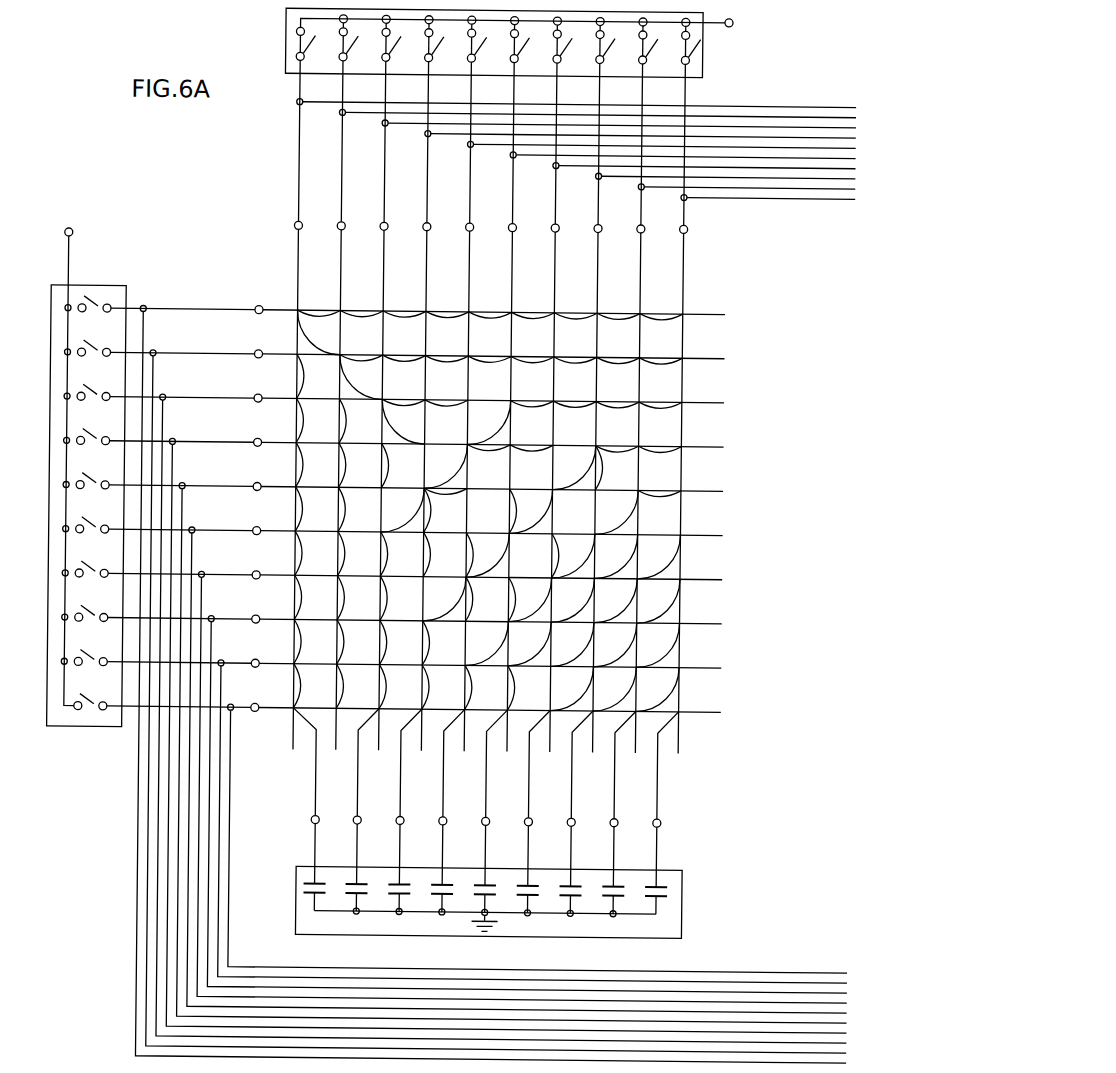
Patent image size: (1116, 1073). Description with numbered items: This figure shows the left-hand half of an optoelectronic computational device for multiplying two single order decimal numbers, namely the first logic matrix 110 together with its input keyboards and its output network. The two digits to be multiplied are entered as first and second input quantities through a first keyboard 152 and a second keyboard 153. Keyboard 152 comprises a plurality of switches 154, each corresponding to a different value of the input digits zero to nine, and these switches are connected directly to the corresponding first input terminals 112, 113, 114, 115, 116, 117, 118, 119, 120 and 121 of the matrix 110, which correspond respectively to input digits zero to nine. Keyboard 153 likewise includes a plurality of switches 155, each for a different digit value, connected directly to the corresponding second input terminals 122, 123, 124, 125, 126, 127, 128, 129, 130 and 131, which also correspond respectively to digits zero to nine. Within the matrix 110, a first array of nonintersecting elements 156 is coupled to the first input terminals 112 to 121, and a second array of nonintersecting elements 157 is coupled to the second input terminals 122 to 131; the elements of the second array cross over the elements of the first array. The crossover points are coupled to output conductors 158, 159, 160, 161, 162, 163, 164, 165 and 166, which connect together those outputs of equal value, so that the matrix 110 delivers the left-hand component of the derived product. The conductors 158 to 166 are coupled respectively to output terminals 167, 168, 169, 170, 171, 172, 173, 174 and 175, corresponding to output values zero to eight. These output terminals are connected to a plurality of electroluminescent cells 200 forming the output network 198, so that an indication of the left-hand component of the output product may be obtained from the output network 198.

The first logic matrix 110 is at (723, 283).
The first input terminal 112 is at (293, 223).
The first input terminal 113 is at (336, 223).
The first input terminal 114 is at (379, 223).
The first input terminal 115 is at (422, 223).
The first input terminal 116 is at (465, 223).
The first input terminal 117 is at (508, 223).
The first input terminal 118 is at (551, 223).
The first input terminal 119 is at (594, 223).
The first input terminal 120 is at (636, 223).
The first input terminal 121 is at (679, 223).
The second input terminal 122 is at (260, 307).
The second input terminal 123 is at (262, 352).
The second input terminal 124 is at (262, 396).
The second input terminal 125 is at (262, 440).
The second input terminal 126 is at (262, 484).
The second input terminal 127 is at (262, 529).
The second input terminal 128 is at (262, 573).
The second input terminal 129 is at (262, 617).
The second input terminal 130 is at (262, 661).
The second input terminal 131 is at (262, 706).
The first keyboard 152 is at (700, 61).
The second keyboard 153 is at (136, 293).
The switches 154 is at (290, 47).
The switches 155 is at (92, 287).
The first array of nonintersecting elements 156 is at (386, 293).
The second array of nonintersecting elements 157 is at (708, 362).
The output conductor 158 is at (318, 785).
The output conductor 159 is at (360, 785).
The output conductor 160 is at (402, 785).
The output conductor 161 is at (445, 785).
The output conductor 162 is at (488, 785).
The output conductor 163 is at (531, 785).
The output conductor 164 is at (574, 785).
The output conductor 165 is at (616, 785).
The output conductor 166 is at (659, 785).
The output terminal 167 is at (314, 819).
The output terminal 168 is at (356, 819).
The output terminal 169 is at (398, 819).
The output terminal 170 is at (441, 819).
The output terminal 171 is at (484, 819).
The output terminal 172 is at (527, 819).
The output terminal 173 is at (570, 819).
The output terminal 174 is at (612, 819).
The output terminal 175 is at (655, 819).
The output network 198 is at (688, 912).
The electroluminescent cells 200 is at (331, 887).